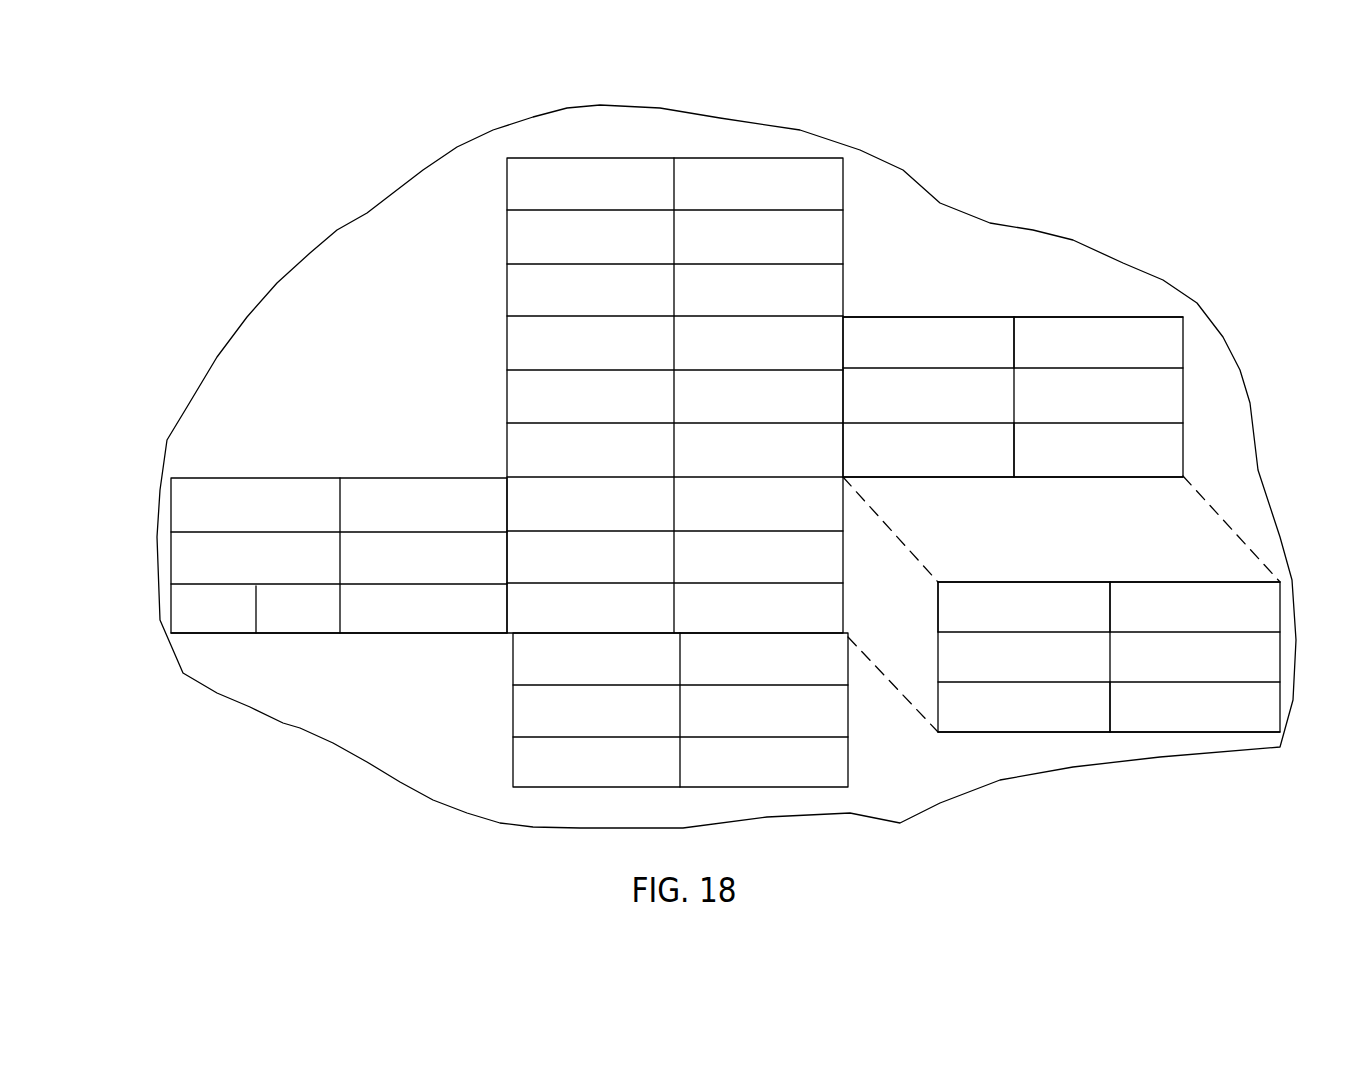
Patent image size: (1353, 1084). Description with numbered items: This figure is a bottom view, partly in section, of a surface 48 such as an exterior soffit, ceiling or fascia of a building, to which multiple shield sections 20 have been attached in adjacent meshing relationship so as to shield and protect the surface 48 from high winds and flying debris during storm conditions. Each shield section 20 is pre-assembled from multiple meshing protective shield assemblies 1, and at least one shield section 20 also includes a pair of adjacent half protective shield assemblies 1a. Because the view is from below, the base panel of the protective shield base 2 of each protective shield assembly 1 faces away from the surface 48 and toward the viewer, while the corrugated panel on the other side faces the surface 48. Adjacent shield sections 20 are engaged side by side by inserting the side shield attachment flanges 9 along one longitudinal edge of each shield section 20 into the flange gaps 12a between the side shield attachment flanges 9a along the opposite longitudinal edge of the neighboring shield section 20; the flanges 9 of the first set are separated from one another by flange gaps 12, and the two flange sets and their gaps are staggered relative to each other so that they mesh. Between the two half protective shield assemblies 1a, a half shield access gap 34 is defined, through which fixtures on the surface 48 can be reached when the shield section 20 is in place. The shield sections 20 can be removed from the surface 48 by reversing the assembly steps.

The protective shield assembly 1 is at (725, 490).
The half protective shield assembly 1a is at (297, 640).
The protective shield base 2 is at (1207, 622).
The side shield attachment flange 9 is at (963, 317).
The side shield attachment flange 9a is at (1002, 480).
The flange gap 12 is at (1062, 312).
The flange gap 12a is at (944, 484).
The shield section 20 is at (725, 490).
The half shield access gap 34 is at (258, 603).
The surface 48 is at (975, 242).